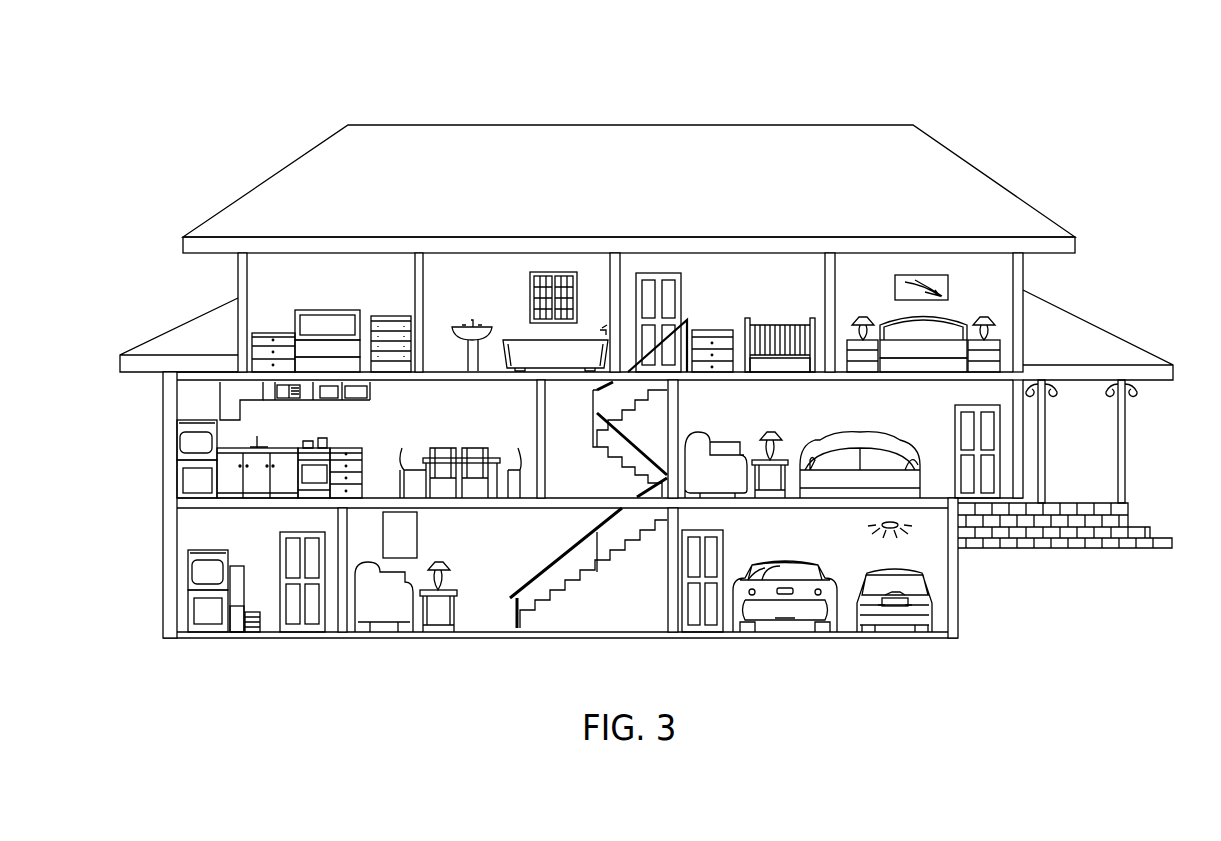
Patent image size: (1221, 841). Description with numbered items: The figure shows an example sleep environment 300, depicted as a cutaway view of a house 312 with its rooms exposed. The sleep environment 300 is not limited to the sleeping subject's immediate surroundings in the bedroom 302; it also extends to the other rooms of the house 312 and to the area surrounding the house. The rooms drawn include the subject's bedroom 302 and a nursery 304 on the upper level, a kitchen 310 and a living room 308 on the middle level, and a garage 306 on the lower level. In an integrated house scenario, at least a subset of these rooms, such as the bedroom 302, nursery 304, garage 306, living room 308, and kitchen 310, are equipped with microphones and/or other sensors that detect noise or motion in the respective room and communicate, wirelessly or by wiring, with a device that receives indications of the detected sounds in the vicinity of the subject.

The sleep environment 300 is at (158, 70).
The bedroom 302 is at (308, 287).
The nursery 304 is at (798, 287).
The garage 306 is at (792, 541).
The living room 308 is at (794, 417).
The kitchen 310 is at (499, 416).
The house 312 is at (793, 125).